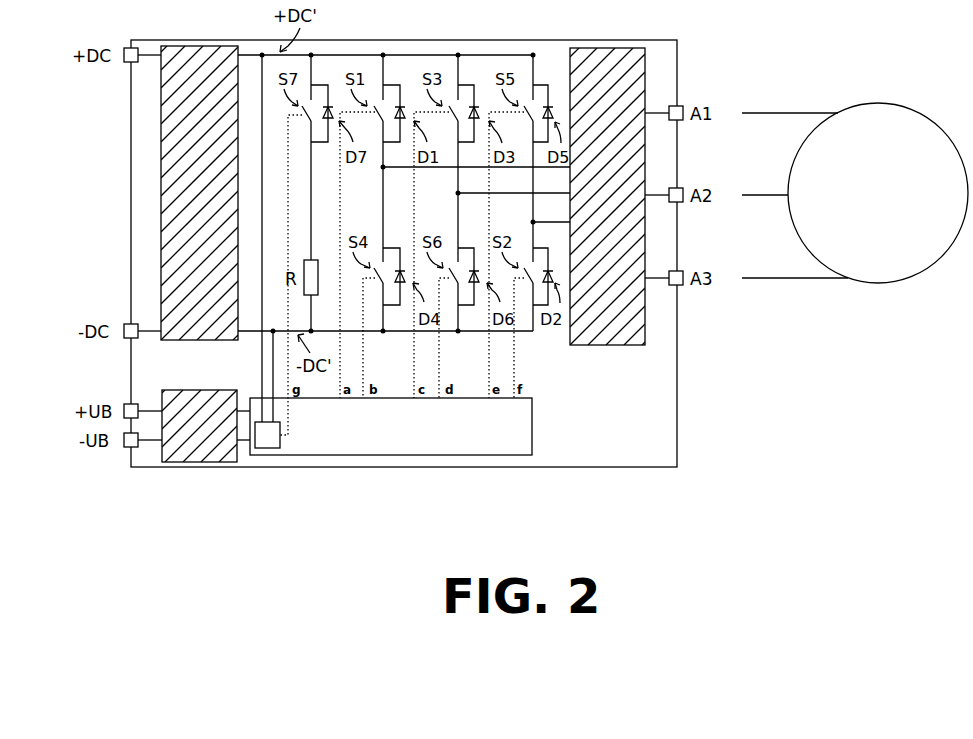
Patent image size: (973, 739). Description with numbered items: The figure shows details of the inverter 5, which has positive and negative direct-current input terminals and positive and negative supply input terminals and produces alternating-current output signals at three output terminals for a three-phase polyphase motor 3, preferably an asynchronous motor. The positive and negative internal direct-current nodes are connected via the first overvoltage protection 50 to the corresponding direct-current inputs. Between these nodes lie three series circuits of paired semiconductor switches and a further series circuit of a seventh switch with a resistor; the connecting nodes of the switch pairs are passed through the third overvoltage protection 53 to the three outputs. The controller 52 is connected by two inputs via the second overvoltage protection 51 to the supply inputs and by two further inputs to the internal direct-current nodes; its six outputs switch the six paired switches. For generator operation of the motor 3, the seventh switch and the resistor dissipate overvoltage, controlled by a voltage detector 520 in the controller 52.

The motor 3 is at (868, 283).
The inverter 5 is at (677, 437).
The first overvoltage protection 50 is at (190, 340).
The second overvoltage protection 51 is at (193, 389).
The controller 52 is at (532, 420).
The third overvoltage protection 53 is at (591, 345).
The voltage detector 520 is at (282, 447).